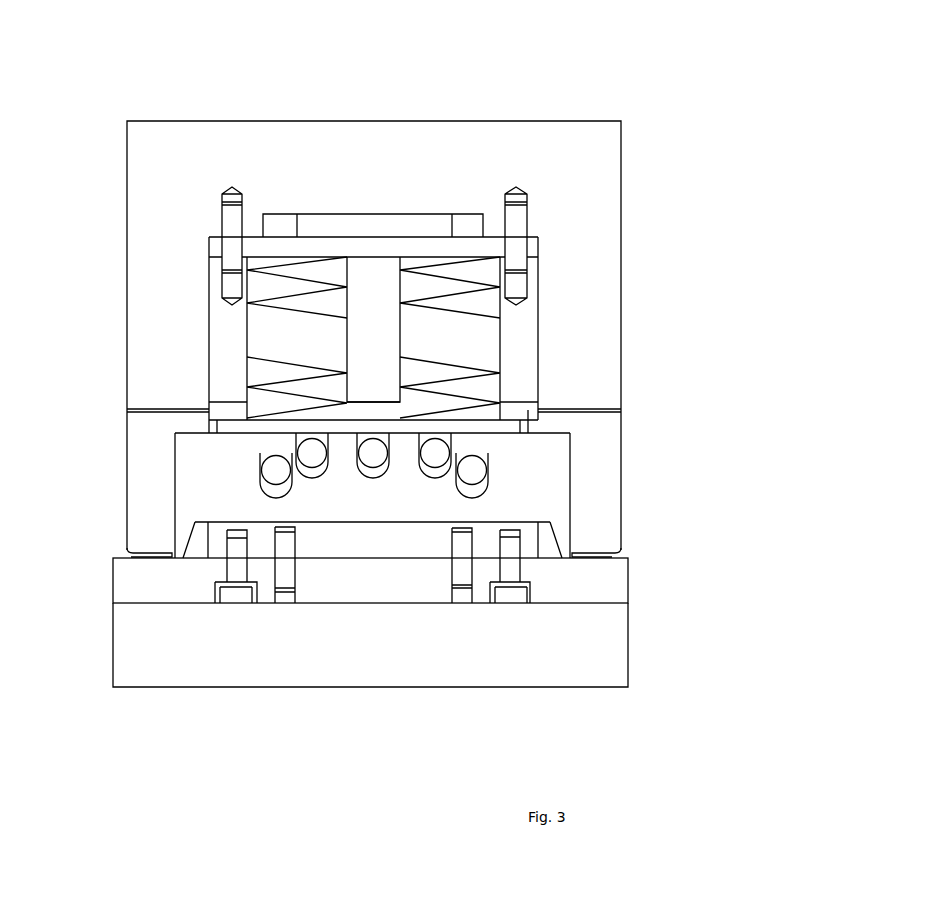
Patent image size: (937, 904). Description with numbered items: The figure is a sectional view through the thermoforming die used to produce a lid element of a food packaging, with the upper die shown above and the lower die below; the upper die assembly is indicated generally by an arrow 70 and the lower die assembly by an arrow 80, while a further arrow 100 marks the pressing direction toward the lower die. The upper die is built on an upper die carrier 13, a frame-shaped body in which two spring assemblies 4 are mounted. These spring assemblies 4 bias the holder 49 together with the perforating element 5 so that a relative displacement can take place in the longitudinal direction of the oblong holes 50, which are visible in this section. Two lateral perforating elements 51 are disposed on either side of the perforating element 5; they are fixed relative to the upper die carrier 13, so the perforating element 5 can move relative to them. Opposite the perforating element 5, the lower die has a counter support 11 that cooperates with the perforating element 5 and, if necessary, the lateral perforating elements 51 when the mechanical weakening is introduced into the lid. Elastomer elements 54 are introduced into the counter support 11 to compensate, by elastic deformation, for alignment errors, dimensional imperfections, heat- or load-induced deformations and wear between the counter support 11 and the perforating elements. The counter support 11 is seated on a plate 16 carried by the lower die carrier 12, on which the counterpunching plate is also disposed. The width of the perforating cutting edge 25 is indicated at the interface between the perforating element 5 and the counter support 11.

The upper die assembly 70 is at (170, 97).
The press force direction 100 is at (373, 137).
The lower die assembly 80 is at (155, 705).
The upper die carrier 13 is at (542, 162).
The lateral perforating elements 51 is at (148, 468).
The spring assemblies 4 is at (280, 365).
The holder 49 is at (483, 427).
The perforating element 5 is at (217, 453).
The oblong holes 50 is at (280, 455).
The elastomer elements 54 is at (207, 547).
The counter support 11 is at (375, 540).
The width of the perforating or stamping cutting edge 25 is at (306, 538).
The lower die plate 16 is at (593, 578).
The lower die carrier 12 is at (408, 647).